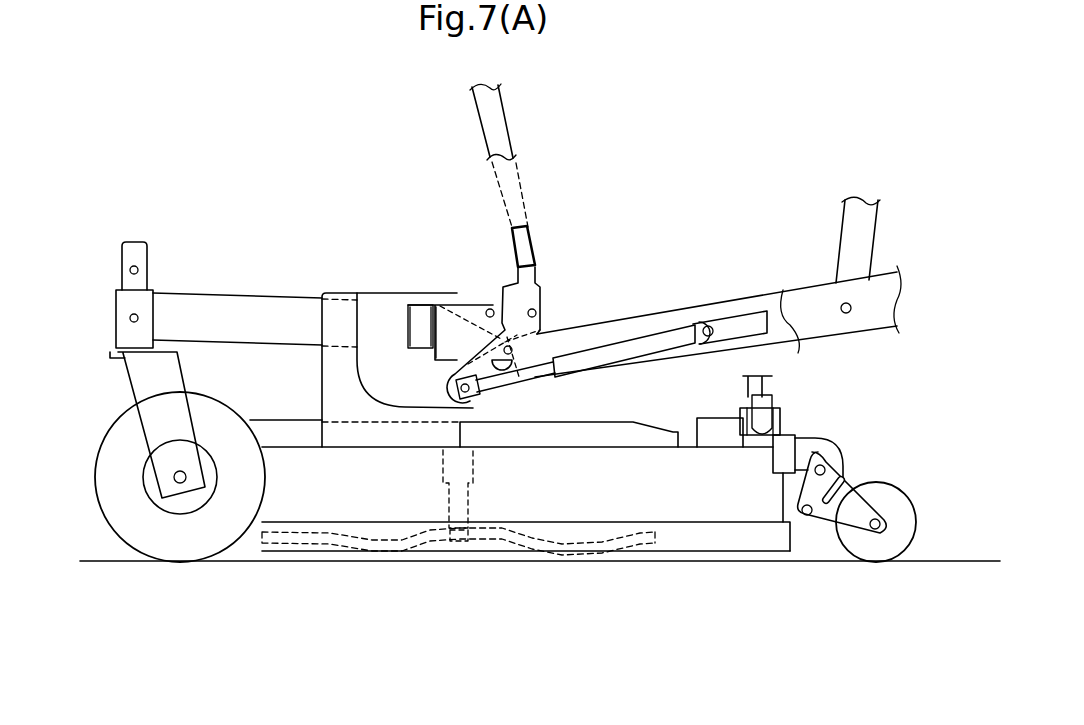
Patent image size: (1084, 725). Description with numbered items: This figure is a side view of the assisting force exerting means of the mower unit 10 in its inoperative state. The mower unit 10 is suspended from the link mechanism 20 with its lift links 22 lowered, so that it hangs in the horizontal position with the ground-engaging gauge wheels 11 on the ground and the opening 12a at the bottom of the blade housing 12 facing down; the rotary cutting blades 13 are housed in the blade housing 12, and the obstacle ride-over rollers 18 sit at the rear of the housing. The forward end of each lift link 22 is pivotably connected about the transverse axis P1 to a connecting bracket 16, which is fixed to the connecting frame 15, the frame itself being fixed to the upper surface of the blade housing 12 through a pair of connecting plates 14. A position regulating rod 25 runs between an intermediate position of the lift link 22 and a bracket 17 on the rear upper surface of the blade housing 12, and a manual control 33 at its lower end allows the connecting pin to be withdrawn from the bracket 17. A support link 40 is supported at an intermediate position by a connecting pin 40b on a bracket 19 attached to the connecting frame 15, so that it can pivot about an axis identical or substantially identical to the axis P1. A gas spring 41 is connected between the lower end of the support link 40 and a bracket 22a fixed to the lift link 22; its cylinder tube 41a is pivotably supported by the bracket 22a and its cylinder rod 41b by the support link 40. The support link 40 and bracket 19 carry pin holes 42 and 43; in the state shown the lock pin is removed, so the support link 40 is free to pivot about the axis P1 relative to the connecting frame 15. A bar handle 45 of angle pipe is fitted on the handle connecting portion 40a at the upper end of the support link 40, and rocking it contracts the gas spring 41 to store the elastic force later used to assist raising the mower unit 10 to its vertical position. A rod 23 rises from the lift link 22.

The mower unit 10 is at (250, 247).
The gauge wheel 11 is at (112, 457).
The blade housing 12 is at (290, 446).
The opening 12a is at (491, 551).
The cutting blade 13 is at (315, 547).
The connecting plate 14 is at (382, 293).
The connecting frame 15 is at (426, 302).
The connecting bracket 16 is at (447, 345).
The bracket 17 is at (718, 418).
The obstacle ride-over roller 18 is at (878, 483).
The bracket 19 is at (460, 298).
The link mechanism 20 is at (662, 312).
The lift link 22 is at (803, 289).
The bracket 22a is at (735, 312).
The support rod 23 is at (840, 238).
The position regulating rod 25 is at (768, 388).
The manual control 33 is at (777, 412).
The support link 40 is at (528, 292).
The handle connecting portion 40a is at (530, 233).
The connecting pin 40b is at (522, 368).
The gas spring 41 is at (540, 478).
The cylinder tube 41a is at (632, 352).
The cylinder rod 41b is at (546, 382).
The pin hole 42 is at (538, 312).
The pin hole 43 is at (493, 305).
The bar handle 45 is at (485, 120).
The axis P1 is at (503, 377).